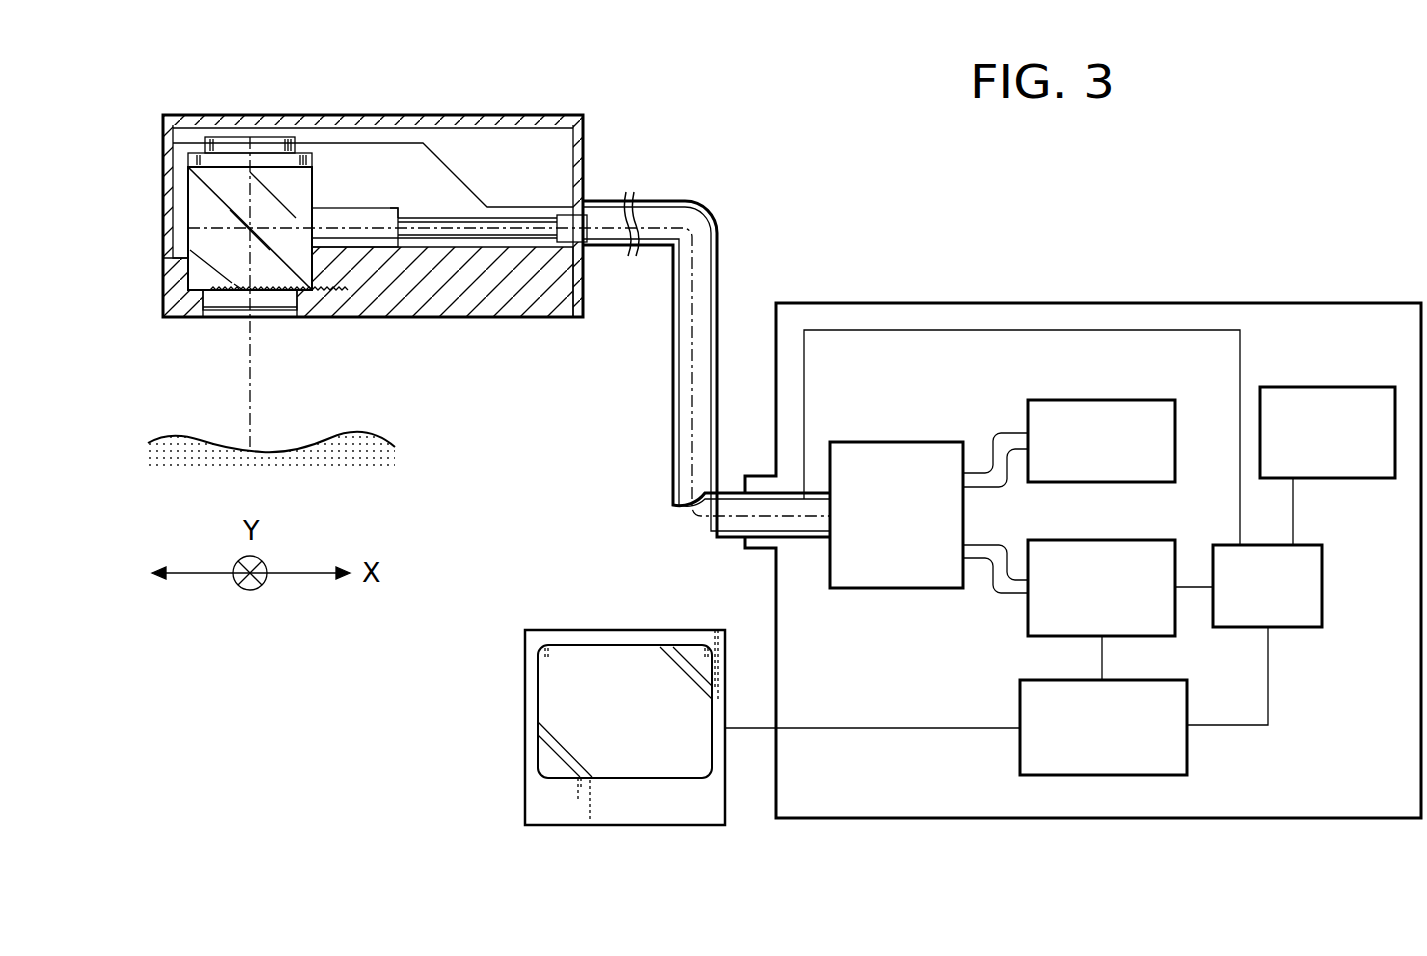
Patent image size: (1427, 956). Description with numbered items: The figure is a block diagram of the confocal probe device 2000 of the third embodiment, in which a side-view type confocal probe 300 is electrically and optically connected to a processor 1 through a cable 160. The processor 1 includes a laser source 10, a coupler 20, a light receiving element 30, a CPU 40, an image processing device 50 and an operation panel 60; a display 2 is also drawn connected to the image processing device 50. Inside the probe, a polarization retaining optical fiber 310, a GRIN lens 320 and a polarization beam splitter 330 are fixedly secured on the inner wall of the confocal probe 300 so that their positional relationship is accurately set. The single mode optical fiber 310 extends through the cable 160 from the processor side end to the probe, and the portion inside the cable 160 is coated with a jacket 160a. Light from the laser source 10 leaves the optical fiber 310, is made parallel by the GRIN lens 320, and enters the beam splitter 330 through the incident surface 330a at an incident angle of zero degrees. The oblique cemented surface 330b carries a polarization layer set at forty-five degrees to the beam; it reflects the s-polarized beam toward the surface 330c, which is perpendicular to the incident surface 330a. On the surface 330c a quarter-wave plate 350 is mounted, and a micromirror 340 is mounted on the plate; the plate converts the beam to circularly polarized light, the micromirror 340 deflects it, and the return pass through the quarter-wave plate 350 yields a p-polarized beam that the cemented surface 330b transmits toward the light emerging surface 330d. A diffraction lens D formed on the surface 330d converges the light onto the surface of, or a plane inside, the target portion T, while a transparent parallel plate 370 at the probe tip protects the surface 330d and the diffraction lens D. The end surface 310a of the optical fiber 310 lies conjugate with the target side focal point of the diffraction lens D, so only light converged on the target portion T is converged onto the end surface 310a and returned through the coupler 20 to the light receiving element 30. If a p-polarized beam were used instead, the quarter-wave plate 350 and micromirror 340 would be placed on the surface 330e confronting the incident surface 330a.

The processor 1 is at (1028, 303).
The display device 2 is at (607, 630).
The laser source 10 is at (1127, 399).
The coupler 20 is at (923, 441).
The light receiving element 30 is at (1123, 540).
The CPU 40 is at (1323, 587).
The image processing device 50 is at (1020, 708).
The operation panel 60 is at (1360, 387).
The cable 160 is at (673, 193).
The jacket 160a is at (673, 442).
The confocal probe 300 is at (508, 116).
The polarization retaining optical fiber 310 is at (530, 240).
The end surface of the optical fiber 310a is at (398, 210).
The GRIN lens 320 is at (370, 240).
The polarization beam splitter 330 is at (198, 208).
The incident surface 330a is at (313, 240).
The cemented surface 330b is at (232, 230).
The surface 330c is at (198, 185).
The light emerging surface 330d is at (208, 293).
The surface 330e is at (187, 258).
The micromirror 340 is at (292, 137).
The λ/4 plate 350 is at (240, 157).
The transparent parallel plate 370 is at (267, 312).
The confocal probe device 2000 is at (350, 670).
The diffraction lens D is at (233, 293).
The target portion T is at (168, 432).